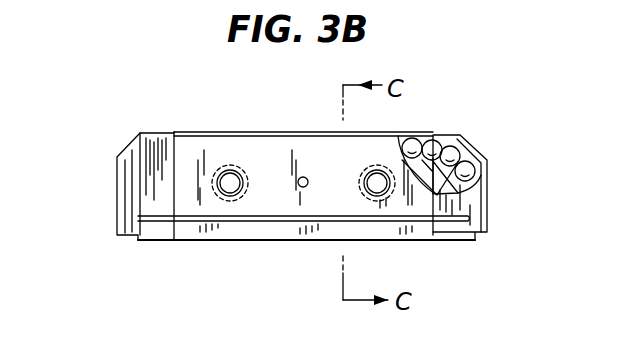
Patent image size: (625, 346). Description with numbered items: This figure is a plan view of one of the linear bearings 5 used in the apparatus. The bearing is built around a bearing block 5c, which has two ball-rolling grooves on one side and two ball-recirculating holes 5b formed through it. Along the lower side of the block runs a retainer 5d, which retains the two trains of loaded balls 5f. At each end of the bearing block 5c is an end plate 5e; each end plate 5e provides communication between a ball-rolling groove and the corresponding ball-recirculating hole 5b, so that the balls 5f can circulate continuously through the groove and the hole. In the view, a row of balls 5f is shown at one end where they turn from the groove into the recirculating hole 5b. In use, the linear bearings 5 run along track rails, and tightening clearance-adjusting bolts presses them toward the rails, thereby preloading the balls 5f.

The linear bearing 5 is at (156, 126).
The ball-recirculating hole 5b is at (418, 136).
The bearing block 5c is at (238, 132).
The retainer 5d is at (248, 242).
The end plate 5e is at (130, 148).
The ball 5f is at (437, 138).